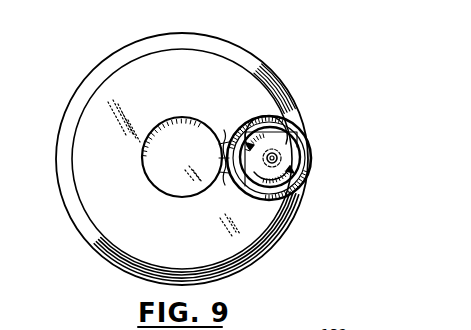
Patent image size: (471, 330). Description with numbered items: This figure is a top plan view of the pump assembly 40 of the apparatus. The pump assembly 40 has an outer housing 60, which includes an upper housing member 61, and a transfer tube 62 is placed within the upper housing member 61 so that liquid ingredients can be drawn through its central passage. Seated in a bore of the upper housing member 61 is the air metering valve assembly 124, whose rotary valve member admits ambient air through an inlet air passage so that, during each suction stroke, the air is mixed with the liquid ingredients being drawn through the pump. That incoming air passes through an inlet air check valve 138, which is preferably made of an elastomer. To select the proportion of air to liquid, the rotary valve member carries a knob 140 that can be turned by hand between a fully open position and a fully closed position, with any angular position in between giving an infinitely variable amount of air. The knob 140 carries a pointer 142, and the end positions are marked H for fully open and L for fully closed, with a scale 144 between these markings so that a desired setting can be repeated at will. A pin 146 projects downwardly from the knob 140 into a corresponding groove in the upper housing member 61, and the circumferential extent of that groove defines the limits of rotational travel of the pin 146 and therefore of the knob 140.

The pump assembly 40 is at (153, 37).
The outer housing 60 is at (100, 65).
The upper housing member 61 is at (228, 61).
The transfer tube 62 is at (187, 155).
The air metering valve assembly 124 is at (308, 132).
The inlet air check valve 138 is at (300, 171).
The knob 140 is at (313, 153).
The pointer 142 is at (241, 117).
The scale 144 is at (225, 186).
The pin 146 is at (294, 119).